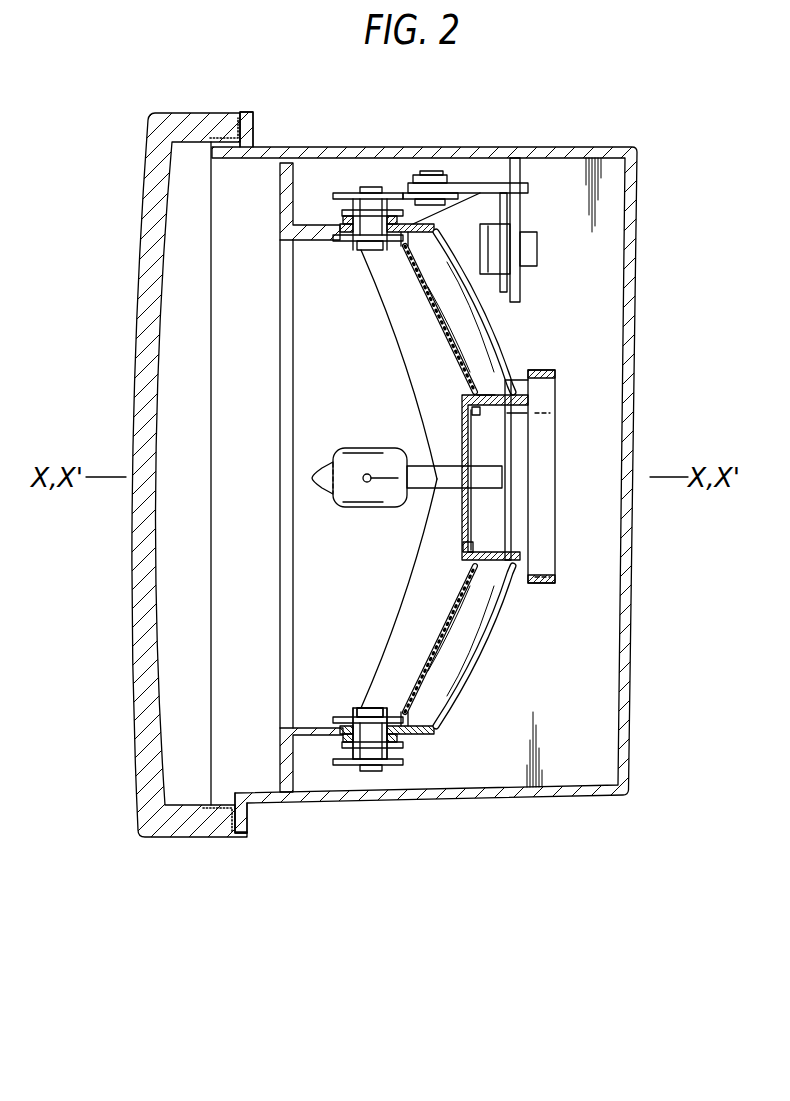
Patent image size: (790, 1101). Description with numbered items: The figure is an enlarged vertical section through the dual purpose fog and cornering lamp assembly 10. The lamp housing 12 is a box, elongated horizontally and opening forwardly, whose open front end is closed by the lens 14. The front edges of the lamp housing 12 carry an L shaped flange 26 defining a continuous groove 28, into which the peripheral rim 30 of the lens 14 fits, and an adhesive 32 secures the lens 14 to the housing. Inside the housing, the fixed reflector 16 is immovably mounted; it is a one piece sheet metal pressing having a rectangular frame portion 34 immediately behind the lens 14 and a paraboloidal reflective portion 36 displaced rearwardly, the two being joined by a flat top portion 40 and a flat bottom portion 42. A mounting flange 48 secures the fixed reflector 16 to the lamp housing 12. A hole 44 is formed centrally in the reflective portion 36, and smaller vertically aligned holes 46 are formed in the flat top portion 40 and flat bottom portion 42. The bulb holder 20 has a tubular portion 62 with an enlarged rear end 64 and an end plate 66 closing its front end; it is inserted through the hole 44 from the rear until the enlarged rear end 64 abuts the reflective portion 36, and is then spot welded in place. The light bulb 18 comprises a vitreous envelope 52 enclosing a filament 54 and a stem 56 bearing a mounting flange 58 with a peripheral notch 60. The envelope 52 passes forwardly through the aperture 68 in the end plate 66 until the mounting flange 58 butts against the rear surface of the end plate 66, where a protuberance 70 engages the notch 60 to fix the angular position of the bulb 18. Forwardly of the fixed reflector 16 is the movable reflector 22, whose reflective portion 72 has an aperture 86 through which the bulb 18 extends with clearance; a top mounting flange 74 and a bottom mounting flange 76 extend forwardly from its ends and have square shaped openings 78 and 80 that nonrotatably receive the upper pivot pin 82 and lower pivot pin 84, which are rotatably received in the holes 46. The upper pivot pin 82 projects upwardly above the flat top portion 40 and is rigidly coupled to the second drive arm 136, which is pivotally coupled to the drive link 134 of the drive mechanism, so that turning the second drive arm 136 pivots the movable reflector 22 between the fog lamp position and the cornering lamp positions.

The lamp assembly 10 is at (641, 118).
The lamp housing 12 is at (572, 147).
The lens 14 is at (142, 196).
The fixed reflector 16 is at (507, 340).
The light bulb 18 is at (402, 471).
The bulb holder 20 is at (500, 456).
The movable reflector 22 is at (465, 663).
The L shaped flange 26 is at (245, 112).
The groove 28 is at (210, 125).
The peripheral rim 30 is at (214, 836).
The adhesive 32 is at (248, 813).
The frame portion 34 is at (289, 165).
The reflective portion 36 is at (482, 322).
The flat top portion 40 is at (315, 224).
The flat bottom portion 42 is at (311, 737).
The hole 44 is at (513, 406).
The holes 46 is at (368, 192).
The mounting flange 48 is at (478, 214).
The envelope 52 is at (361, 455).
The filament 54 is at (364, 482).
The stem 56 is at (418, 489).
The mounting flange 58 is at (473, 515).
The notch 60 is at (480, 415).
The tubular portion 62 is at (488, 393).
The enlarged rear end 64 is at (540, 368).
The end plate 66 is at (462, 447).
The aperture 68 is at (468, 450).
The protuberance 70 is at (484, 412).
The reflective portion 72 is at (462, 604).
The top mounting flange 74 is at (340, 237).
The bottom mounting flange 76 is at (335, 717).
The square shaped opening 78 is at (362, 246).
The square shaped opening 80 is at (360, 710).
The upper pivot pin 82 is at (367, 222).
The lower pivot pin 84 is at (376, 768).
The aperture 86 is at (465, 546).
The drive link 134 is at (470, 183).
The second drive arm 136 is at (401, 193).